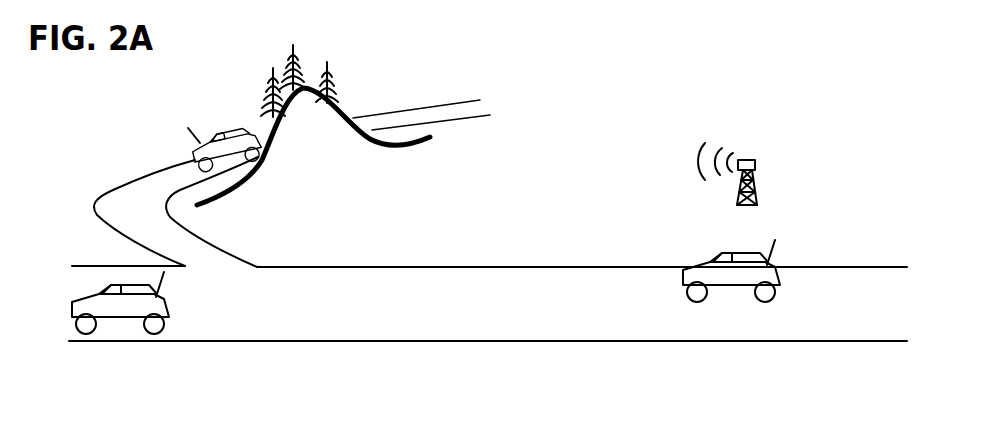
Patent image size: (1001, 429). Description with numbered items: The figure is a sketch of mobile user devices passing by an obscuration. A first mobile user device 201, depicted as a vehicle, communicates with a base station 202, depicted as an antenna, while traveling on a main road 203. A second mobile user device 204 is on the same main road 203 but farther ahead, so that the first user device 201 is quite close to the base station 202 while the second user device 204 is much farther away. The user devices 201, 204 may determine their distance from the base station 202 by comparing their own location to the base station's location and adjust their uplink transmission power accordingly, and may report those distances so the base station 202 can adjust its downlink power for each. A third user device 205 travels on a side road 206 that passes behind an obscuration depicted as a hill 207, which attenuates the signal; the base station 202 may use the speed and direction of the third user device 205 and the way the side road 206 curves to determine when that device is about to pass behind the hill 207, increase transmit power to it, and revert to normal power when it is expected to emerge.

The first mobile user device 201 is at (735, 290).
The base station 202 is at (752, 157).
The main road 203 is at (848, 272).
The second mobile user device 204 is at (125, 320).
The third user device 205 is at (202, 135).
The side road 206 is at (112, 192).
The hill 207 is at (313, 125).